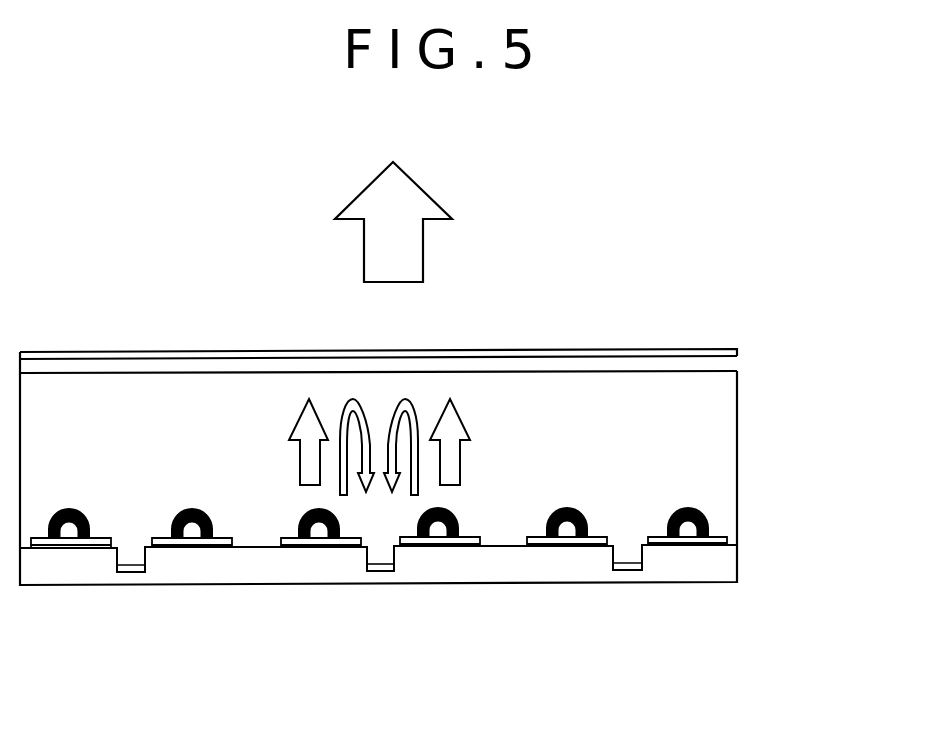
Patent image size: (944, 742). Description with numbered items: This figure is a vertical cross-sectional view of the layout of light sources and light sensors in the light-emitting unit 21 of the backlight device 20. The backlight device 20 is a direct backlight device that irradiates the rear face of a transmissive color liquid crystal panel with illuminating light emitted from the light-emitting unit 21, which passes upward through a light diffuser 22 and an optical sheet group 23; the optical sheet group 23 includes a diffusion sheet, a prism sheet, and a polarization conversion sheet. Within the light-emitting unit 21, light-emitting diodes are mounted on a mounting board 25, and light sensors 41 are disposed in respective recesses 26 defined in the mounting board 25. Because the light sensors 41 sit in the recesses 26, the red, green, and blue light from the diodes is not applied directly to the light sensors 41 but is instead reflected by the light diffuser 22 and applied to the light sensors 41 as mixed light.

The backlight device 20 is at (456, 463).
The light-emitting unit 21 is at (737, 453).
The light diffuser 22 is at (739, 366).
The optical sheet group 23 is at (420, 357).
The mounting board 25 is at (695, 568).
The recesses 26 is at (363, 553).
The light sensors 41 is at (385, 570).